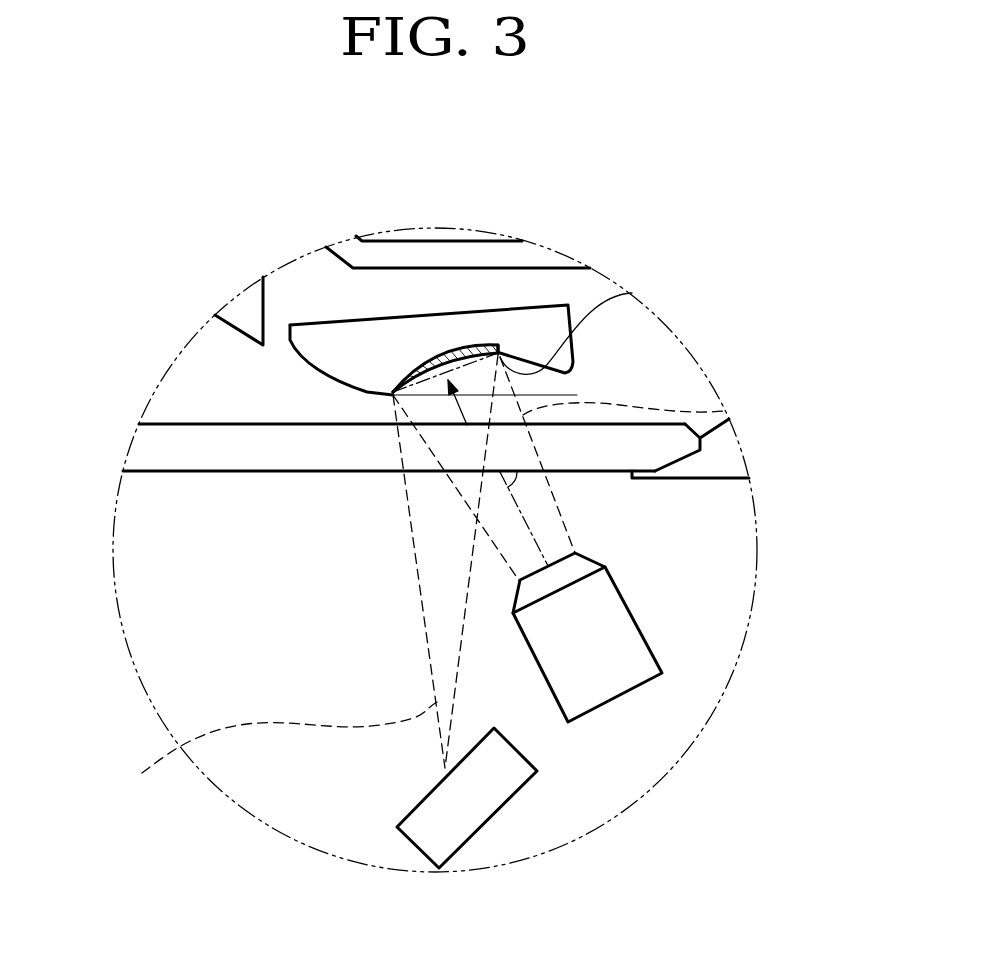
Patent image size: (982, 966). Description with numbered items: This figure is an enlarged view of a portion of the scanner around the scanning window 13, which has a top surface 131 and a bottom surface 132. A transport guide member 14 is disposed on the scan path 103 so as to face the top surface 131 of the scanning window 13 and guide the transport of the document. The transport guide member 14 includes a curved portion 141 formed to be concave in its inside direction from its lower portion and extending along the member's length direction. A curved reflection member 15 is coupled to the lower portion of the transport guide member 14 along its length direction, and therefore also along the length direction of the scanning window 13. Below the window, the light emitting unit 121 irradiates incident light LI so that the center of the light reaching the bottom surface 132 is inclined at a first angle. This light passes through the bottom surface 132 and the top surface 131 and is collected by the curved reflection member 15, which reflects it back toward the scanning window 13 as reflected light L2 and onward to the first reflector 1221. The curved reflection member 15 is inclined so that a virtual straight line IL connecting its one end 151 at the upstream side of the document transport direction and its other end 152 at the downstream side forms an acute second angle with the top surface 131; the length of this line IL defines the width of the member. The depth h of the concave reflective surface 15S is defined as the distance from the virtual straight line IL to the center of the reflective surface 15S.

The scanning window 13 is at (402, 432).
The top surface of the scanning window 131 is at (148, 424).
The bottom surface of the scanning window 132 is at (137, 472).
The transport guide member 14 is at (440, 280).
The curved portion 141 is at (400, 387).
The curved reflection member 15 is at (539, 283).
The one end of the curved reflection member 151 is at (393, 392).
The other end of the curved reflection member 152 is at (500, 356).
The reflective surface 15S is at (492, 360).
The scan path 103 is at (286, 388).
The light emitting unit 121 is at (662, 650).
The first reflector 1221 is at (488, 822).
The virtual straight line IL is at (632, 293).
The incident light LI is at (725, 410).
The reflected light L2 is at (276, 748).
The depth of the reflective surface h is at (462, 357).